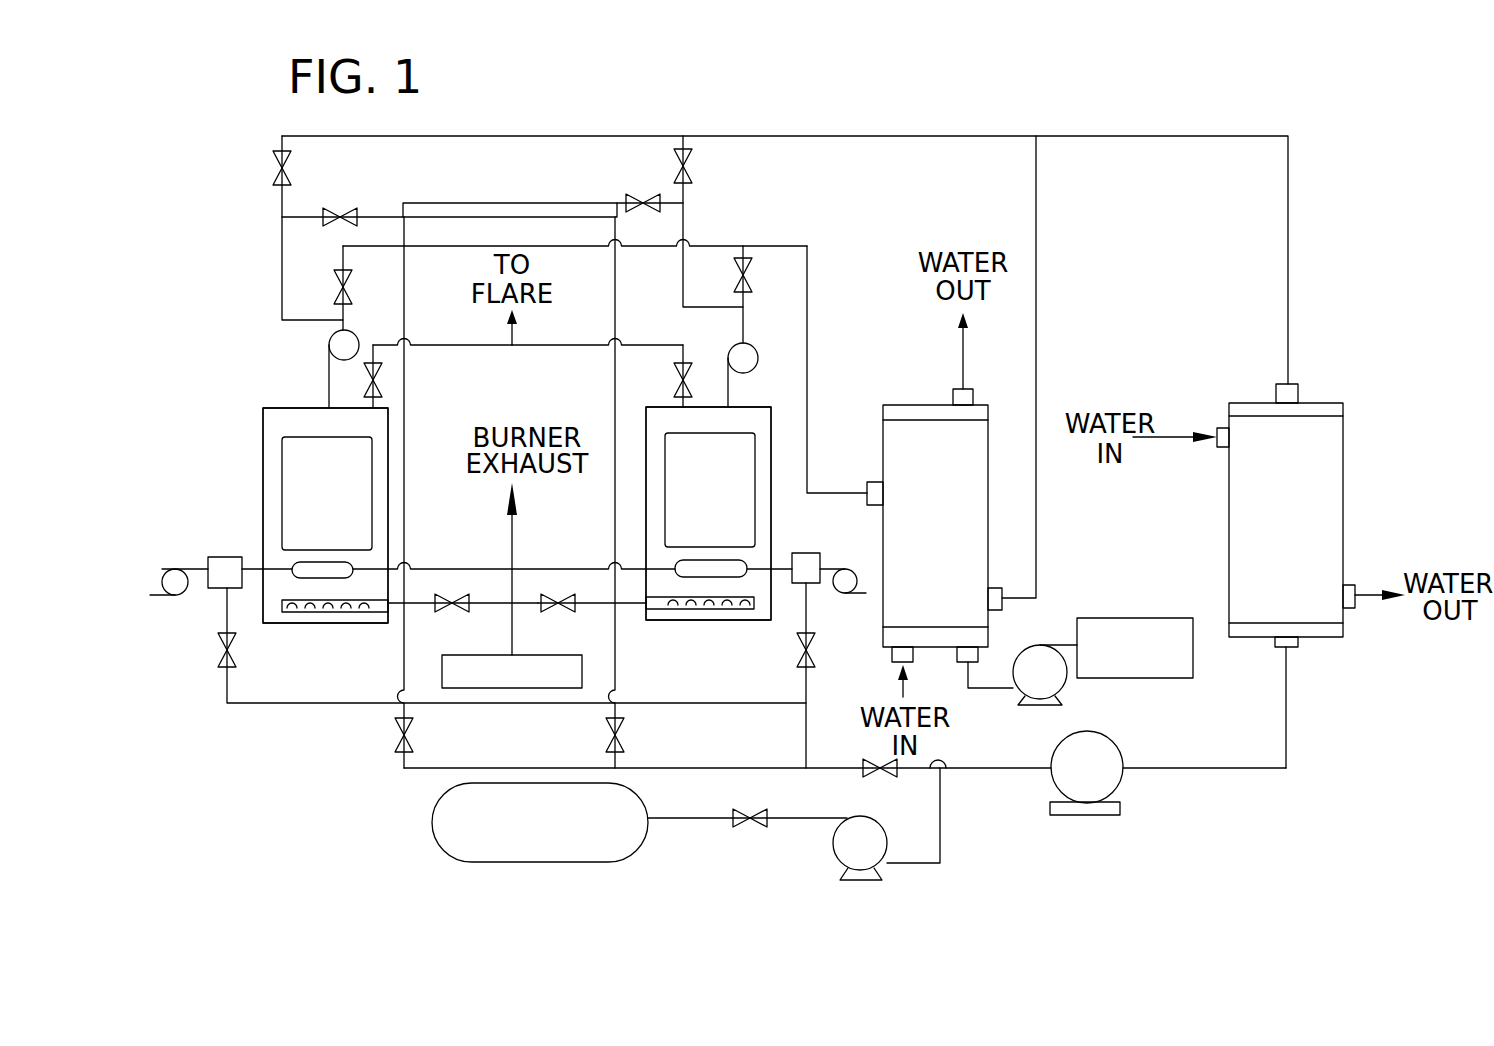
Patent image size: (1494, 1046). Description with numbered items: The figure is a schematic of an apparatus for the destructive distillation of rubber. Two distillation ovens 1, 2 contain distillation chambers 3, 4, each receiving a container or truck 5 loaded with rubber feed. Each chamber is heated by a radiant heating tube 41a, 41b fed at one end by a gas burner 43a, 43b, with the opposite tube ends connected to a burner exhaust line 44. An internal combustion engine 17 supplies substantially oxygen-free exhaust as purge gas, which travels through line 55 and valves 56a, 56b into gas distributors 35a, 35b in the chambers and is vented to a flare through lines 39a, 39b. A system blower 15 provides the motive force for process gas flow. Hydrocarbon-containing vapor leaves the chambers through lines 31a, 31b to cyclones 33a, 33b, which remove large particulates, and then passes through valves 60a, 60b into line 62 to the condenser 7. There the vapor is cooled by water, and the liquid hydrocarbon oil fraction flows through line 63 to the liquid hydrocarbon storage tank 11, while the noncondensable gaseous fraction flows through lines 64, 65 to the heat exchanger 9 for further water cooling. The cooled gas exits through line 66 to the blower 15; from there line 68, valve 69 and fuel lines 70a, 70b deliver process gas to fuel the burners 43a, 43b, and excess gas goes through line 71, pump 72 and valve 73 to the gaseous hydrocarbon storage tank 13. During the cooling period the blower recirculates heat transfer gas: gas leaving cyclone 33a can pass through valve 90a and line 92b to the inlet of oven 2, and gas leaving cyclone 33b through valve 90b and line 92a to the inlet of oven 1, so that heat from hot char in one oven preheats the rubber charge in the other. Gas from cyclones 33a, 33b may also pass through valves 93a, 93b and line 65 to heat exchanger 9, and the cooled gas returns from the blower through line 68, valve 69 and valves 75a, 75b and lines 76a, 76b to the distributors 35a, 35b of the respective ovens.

The distillation oven 1 is at (262, 432).
The distillation oven 2 is at (772, 505).
The distillation chamber 3 is at (268, 502).
The distillation chamber 4 is at (650, 525).
The container or truck 5 is at (282, 475).
The condenser 7 is at (882, 445).
The heat exchanger 9 is at (1229, 543).
The liquid hydrocarbon storage tank 11 is at (1150, 618).
The gaseous hydrocarbon storage tank 13 is at (432, 822).
The system blower 15 is at (1122, 784).
The internal combustion engine 17 is at (432, 695).
The line 31a is at (325, 382).
The line 31b is at (727, 385).
The cyclone 33a is at (329, 345).
The cyclone 33b is at (758, 357).
The gas distributor 35a is at (283, 612).
The gas distributor 35b is at (748, 610).
The line 39a is at (483, 346).
The line 39b is at (518, 346).
The radiant heating tube 41a is at (292, 565).
The radiant heating tube 41b is at (750, 572).
The gas burner 43a is at (197, 592).
The gas burner 43b is at (804, 553).
The burner exhaust line 44 is at (482, 568).
The line 55 is at (513, 635).
The valve 56a is at (458, 607).
The valve 56b is at (548, 590).
The valve 60a is at (335, 287).
The valve 60b is at (752, 283).
The line 62 is at (780, 246).
The line 63 is at (1000, 690).
The line 64 is at (1036, 355).
The line 65 is at (1173, 136).
The line 66 is at (1290, 691).
The line 68 is at (946, 768).
The valve 69 is at (885, 777).
The fuel line 70a is at (226, 625).
The fuel line 70b is at (810, 603).
The line 71 is at (942, 825).
The pump 72 is at (880, 879).
The valve 73 is at (756, 828).
The valve 75a is at (395, 740).
The valve 75b is at (625, 735).
The line 76a is at (400, 664).
The line 76b is at (617, 680).
The valve 90a is at (338, 215).
The valve 90b is at (660, 185).
The line 92a is at (470, 203).
The line 92b is at (505, 217).
The valve 93a is at (273, 172).
The valve 93b is at (692, 166).